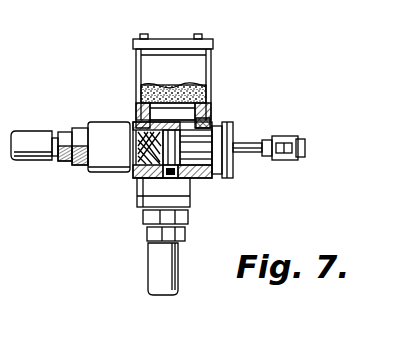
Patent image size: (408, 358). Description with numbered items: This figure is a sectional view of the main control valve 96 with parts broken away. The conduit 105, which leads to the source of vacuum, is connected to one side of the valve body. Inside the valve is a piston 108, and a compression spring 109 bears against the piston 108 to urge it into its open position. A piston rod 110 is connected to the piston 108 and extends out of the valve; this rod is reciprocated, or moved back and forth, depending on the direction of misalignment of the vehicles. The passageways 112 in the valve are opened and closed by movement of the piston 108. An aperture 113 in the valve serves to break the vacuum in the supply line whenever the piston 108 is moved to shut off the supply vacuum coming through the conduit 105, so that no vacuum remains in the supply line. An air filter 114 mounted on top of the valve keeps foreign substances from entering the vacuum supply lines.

The main control valve 96 is at (104, 128).
The conduit 105 is at (31, 138).
The piston 108 is at (200, 178).
The compression spring 109 is at (136, 172).
The piston rod 110 is at (252, 145).
The passageways 112 is at (167, 172).
The aperture 113 is at (205, 113).
The air filter 114 is at (174, 46).